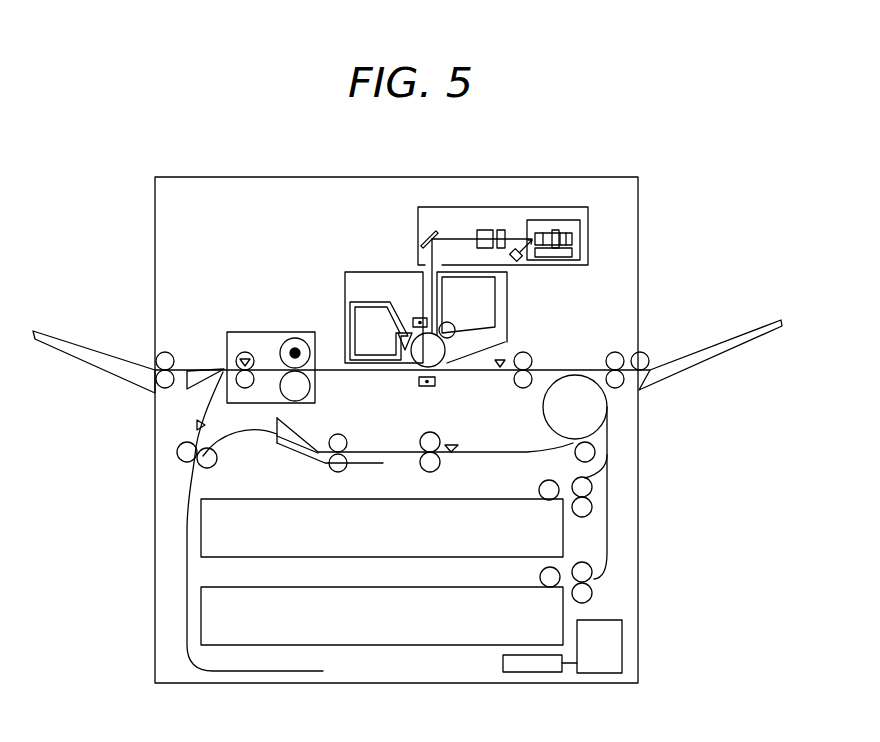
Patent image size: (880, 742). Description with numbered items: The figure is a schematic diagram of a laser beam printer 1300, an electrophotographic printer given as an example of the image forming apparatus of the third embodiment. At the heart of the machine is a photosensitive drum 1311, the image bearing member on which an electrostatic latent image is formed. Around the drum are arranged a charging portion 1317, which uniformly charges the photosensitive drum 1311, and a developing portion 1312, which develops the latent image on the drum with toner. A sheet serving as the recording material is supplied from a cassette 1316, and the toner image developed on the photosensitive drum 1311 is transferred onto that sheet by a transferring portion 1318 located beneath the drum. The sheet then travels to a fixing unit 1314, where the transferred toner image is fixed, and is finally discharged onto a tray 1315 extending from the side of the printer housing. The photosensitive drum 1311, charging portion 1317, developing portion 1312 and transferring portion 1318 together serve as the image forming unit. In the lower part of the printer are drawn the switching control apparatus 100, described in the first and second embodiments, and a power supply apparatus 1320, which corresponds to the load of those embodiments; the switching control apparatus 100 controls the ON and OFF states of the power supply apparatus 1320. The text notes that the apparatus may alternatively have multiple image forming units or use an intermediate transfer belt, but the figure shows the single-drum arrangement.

The laser beam printer 1300 is at (530, 177).
The photosensitive drum 1311 is at (435, 350).
The developing portion 1312 is at (447, 330).
The fixing unit 1314 is at (270, 333).
The tray 1315 is at (97, 351).
The cassette 1316 is at (547, 628).
The charging portion 1317 is at (413, 318).
The transferring portion 1318 is at (435, 382).
The power supply apparatus 1320 is at (622, 645).
The switching control apparatus 100 is at (533, 672).